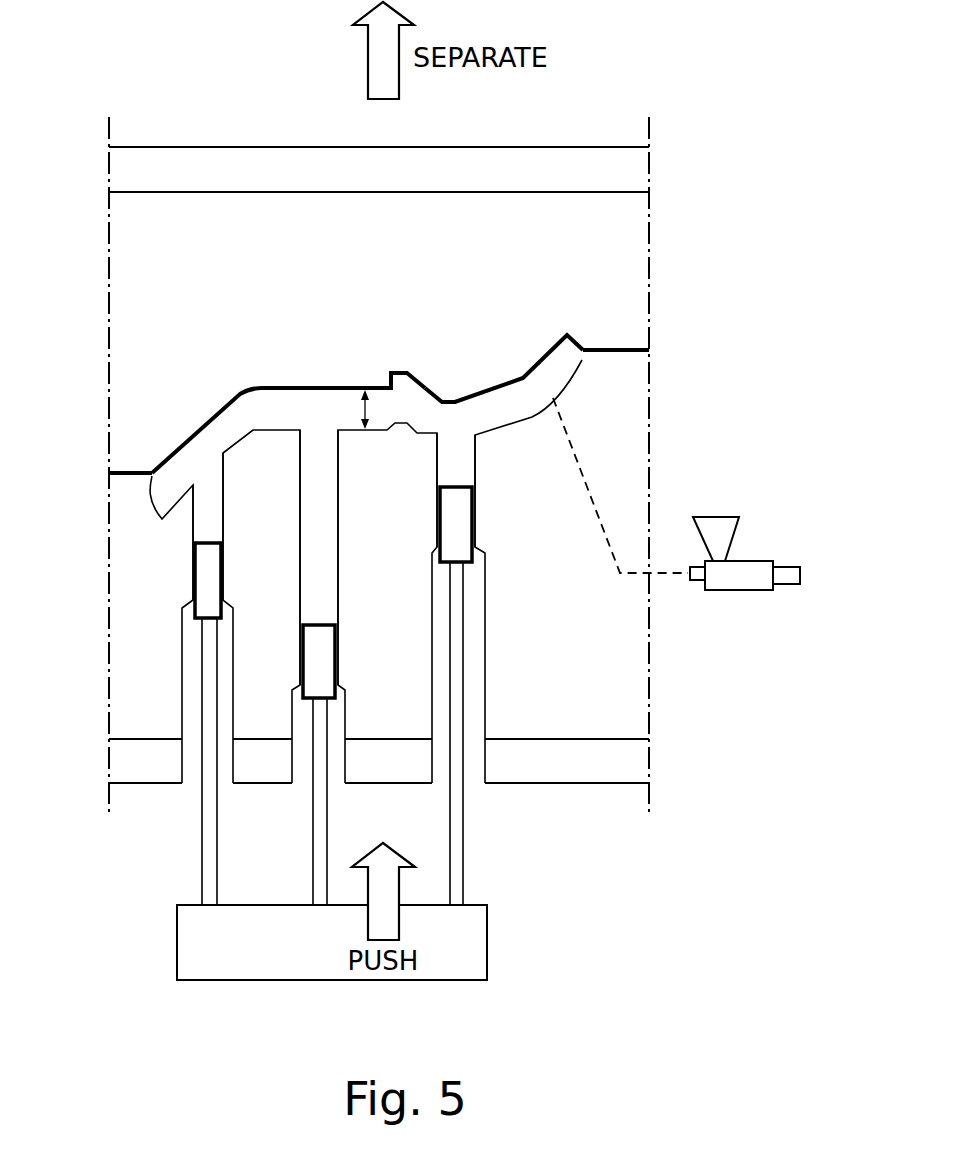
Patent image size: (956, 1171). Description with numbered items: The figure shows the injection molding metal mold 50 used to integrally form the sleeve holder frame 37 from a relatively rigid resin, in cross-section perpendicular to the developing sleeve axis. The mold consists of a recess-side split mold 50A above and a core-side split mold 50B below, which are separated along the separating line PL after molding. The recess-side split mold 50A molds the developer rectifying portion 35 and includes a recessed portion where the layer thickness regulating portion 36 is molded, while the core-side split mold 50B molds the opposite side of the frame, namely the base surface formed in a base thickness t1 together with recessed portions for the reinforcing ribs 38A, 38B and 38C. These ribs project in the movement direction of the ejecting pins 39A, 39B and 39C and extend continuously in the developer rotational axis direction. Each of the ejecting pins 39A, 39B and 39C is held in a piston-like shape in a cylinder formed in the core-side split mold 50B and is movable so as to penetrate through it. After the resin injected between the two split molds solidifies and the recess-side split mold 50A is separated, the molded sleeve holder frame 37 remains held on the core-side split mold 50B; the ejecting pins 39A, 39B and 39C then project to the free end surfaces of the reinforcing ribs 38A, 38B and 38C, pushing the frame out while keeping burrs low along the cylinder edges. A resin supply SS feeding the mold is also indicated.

The injection molding metal mold 50 is at (768, 217).
The recess-side split mold 50A is at (628, 233).
The core-side split mold 50B is at (628, 444).
The separating line PL is at (127, 471).
The developer rectifying portion 35 is at (433, 393).
The layer thickness regulating portion 36 is at (386, 380).
The sleeve holder frame 37 is at (242, 389).
The base thickness t1 is at (347, 409).
The reinforcing rib 38A is at (323, 600).
The reinforcing rib 38B is at (213, 515).
The reinforcing rib 38C is at (463, 463).
The ejecting pin 39A is at (323, 656).
The ejecting pin 39B is at (213, 572).
The ejecting pin 39C is at (463, 520).
The resin supply source SS is at (734, 588).